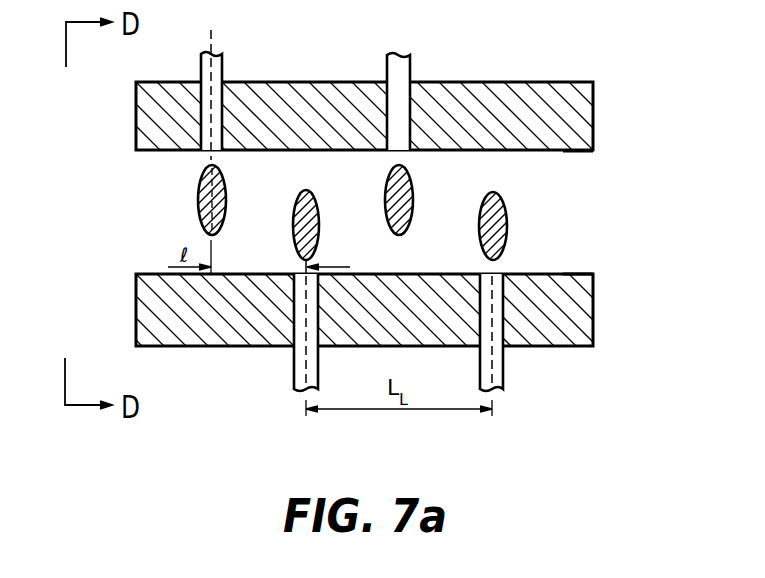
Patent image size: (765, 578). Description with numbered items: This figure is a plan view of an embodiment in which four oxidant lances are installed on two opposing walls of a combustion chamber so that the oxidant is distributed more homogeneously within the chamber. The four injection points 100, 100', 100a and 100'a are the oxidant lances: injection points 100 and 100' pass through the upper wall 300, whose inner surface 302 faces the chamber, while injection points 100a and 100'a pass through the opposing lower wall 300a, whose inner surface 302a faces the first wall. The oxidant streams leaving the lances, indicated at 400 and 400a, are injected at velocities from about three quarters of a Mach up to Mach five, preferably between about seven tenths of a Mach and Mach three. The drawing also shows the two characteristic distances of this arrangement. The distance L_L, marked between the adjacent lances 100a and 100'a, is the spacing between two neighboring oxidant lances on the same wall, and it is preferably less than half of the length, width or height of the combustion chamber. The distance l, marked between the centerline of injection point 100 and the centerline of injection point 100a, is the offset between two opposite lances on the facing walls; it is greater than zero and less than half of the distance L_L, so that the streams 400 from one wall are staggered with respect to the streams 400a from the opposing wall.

The injection point 100 is at (167, 95).
The injection point 100' is at (446, 98).
The injection point 100a is at (294, 370).
The injection point 100'a is at (545, 332).
The first plate 300 is at (585, 122).
The surface of first plate 302 is at (563, 151).
The second plate 300a is at (580, 302).
The surface of second plate 302a is at (563, 275).
The elongated element 400 is at (198, 189).
The elongated element 400a is at (314, 208).